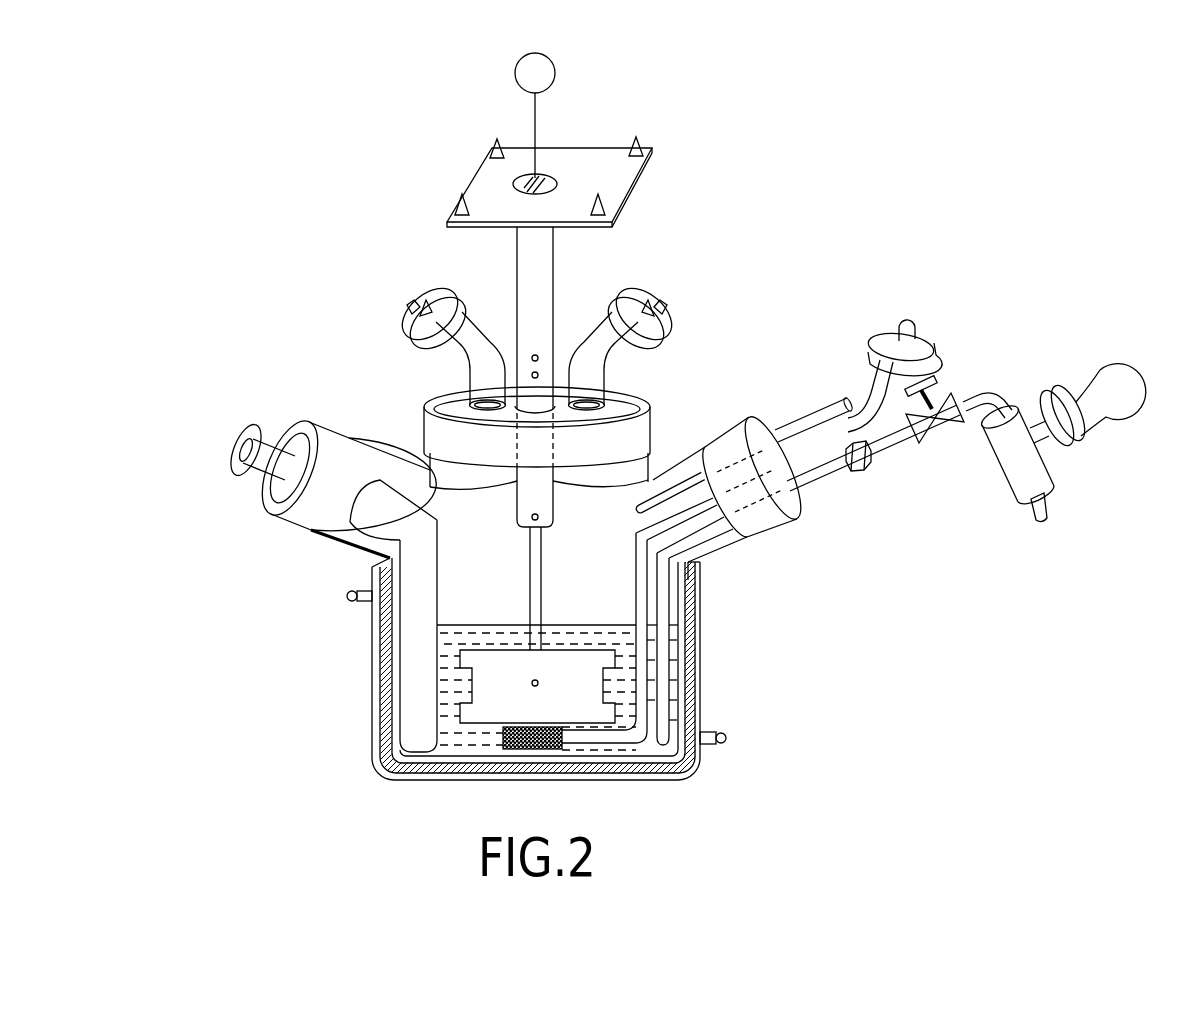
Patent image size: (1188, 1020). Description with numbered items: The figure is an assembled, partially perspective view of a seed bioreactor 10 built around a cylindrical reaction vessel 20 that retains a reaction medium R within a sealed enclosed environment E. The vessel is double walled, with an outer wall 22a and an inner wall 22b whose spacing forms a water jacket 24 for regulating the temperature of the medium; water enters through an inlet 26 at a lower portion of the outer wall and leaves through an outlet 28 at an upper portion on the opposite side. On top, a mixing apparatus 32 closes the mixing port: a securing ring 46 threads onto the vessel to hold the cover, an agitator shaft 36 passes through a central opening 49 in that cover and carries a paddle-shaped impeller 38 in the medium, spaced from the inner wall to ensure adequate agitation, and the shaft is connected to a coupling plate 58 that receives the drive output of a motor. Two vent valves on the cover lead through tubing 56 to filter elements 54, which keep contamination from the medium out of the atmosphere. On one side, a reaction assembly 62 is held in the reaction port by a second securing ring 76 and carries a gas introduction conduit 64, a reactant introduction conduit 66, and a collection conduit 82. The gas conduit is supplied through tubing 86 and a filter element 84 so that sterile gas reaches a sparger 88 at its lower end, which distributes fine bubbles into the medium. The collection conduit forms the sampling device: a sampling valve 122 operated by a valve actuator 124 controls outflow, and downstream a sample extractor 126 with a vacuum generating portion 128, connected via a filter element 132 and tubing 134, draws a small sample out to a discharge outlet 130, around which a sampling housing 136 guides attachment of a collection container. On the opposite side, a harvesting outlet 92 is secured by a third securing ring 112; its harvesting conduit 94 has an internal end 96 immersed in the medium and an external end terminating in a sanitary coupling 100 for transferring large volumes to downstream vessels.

The bioreactor 10 is at (770, 278).
The reaction vessel 20 is at (430, 472).
The outer wall 22a is at (700, 625).
The inner wall 22b is at (698, 580).
The water jacket 24 is at (700, 683).
The inlet 26 is at (725, 738).
The outlet 28 is at (348, 592).
The mixing apparatus 32 is at (381, 314).
The shaft 36 is at (545, 572).
The paddle-shaped impeller 38 is at (470, 713).
The securing ring 46 is at (643, 427).
The central opening 49 is at (548, 408).
The filter elements 54 is at (447, 302).
The tubing 56 is at (480, 345).
The coupling plate 58 is at (592, 158).
The reaction assembly 62 is at (949, 527).
The gas introduction conduit 64 is at (637, 594).
The reactant introduction conduit 66 is at (840, 398).
The second securing ring 76 is at (733, 445).
The collection conduit 82 is at (815, 482).
The filter element 84 is at (915, 345).
The tubing 86 is at (880, 380).
The sparger 88 is at (533, 752).
The harvesting outlet 92 is at (208, 498).
The harvesting conduit 94 is at (412, 630).
The internal end 96 is at (412, 745).
The sanitary coupling 100 is at (262, 430).
The third securing ring 112 is at (300, 506).
The sampling valve 122 is at (942, 398).
The valve actuator 124 is at (872, 452).
The sample extractor 126 is at (1133, 333).
The vacuum generating portion 128 is at (1133, 397).
The discharge outlet 130 is at (1048, 510).
The filter element 132 is at (1063, 392).
The tubing 134 is at (1037, 425).
The sampling housing 136 is at (1007, 460).
The enclosed environment E is at (477, 579).
The reaction medium R is at (455, 738).